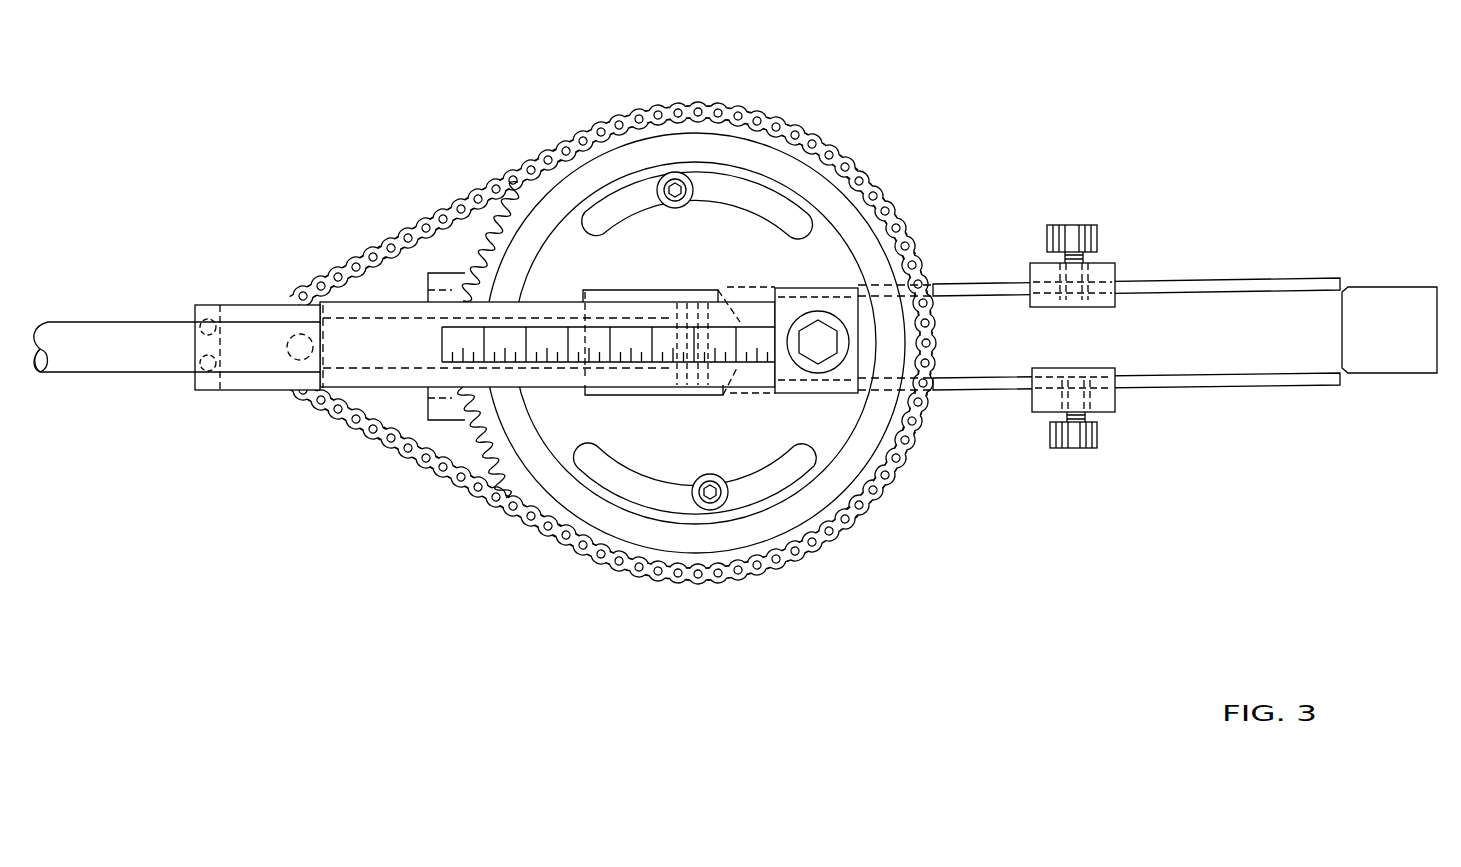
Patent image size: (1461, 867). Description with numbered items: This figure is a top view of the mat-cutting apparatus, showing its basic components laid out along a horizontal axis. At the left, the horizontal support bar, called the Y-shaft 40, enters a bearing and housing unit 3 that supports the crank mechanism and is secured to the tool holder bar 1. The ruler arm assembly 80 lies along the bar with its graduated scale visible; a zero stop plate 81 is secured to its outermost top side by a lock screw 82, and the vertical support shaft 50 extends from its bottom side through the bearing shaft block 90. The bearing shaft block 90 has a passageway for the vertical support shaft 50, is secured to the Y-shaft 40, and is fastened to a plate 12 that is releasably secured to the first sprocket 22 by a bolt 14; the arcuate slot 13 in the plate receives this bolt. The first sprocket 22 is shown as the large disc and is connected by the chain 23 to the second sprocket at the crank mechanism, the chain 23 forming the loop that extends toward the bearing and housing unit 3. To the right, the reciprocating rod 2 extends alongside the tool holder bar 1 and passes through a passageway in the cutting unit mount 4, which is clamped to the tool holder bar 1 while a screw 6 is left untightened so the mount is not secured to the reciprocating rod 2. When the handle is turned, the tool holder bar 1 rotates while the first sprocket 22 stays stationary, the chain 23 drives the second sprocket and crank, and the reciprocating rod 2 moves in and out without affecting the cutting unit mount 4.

The tool holder bar 1 is at (1383, 286).
The reciprocating rod 2 is at (1307, 277).
The bearing and housing unit 3 is at (262, 318).
The cutting unit mount 4 is at (1114, 264).
The screw 6 is at (1070, 224).
The plate 12 is at (571, 424).
The arcuate slot 13 is at (636, 477).
The bolt 14 is at (707, 503).
The first sprocket 22 is at (482, 272).
The chain 23 is at (413, 457).
The Y-shaft 40 is at (87, 320).
The vertical support shaft 50 is at (704, 363).
The ruler arm assembly 80 is at (600, 312).
The zero stop plate 81 is at (838, 310).
The lock screw 82 is at (820, 340).
The bearing shaft block 90 is at (647, 296).